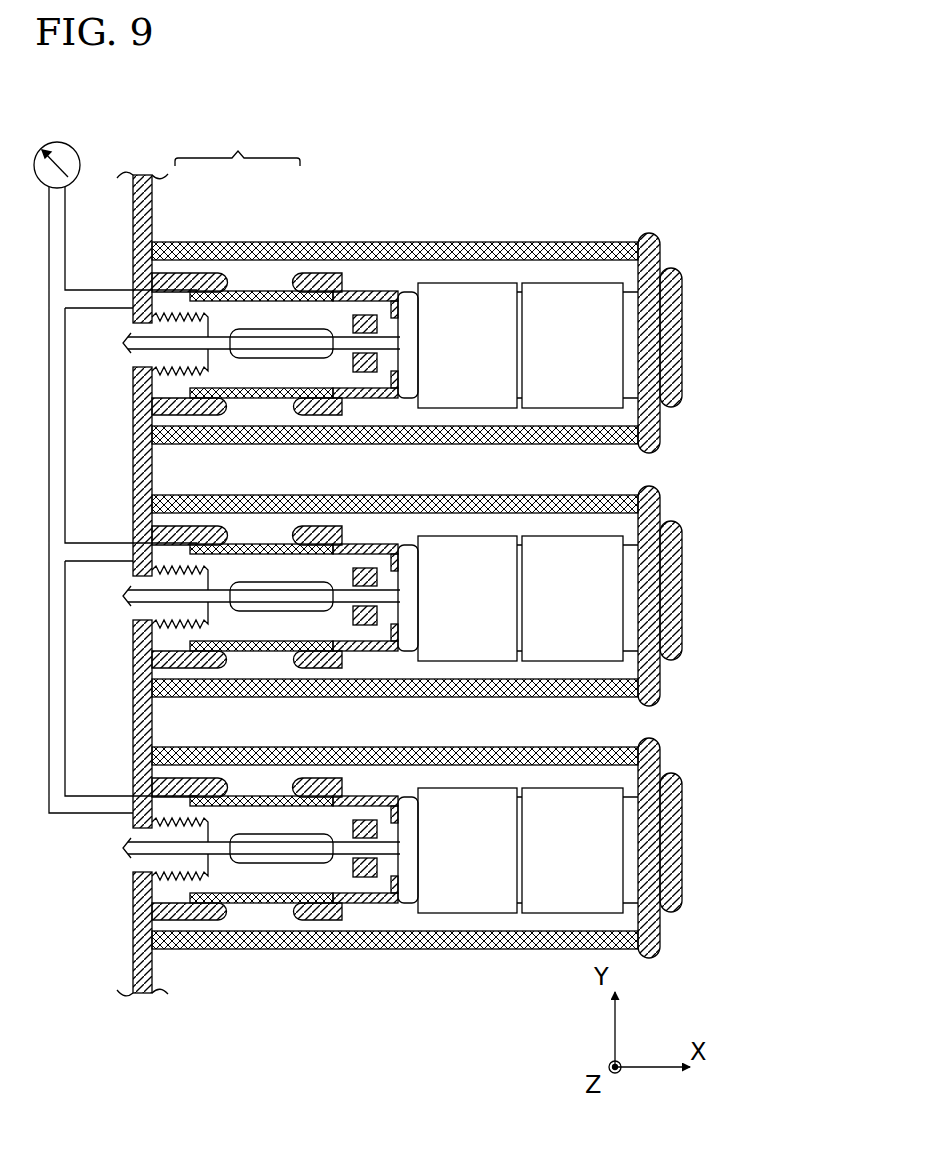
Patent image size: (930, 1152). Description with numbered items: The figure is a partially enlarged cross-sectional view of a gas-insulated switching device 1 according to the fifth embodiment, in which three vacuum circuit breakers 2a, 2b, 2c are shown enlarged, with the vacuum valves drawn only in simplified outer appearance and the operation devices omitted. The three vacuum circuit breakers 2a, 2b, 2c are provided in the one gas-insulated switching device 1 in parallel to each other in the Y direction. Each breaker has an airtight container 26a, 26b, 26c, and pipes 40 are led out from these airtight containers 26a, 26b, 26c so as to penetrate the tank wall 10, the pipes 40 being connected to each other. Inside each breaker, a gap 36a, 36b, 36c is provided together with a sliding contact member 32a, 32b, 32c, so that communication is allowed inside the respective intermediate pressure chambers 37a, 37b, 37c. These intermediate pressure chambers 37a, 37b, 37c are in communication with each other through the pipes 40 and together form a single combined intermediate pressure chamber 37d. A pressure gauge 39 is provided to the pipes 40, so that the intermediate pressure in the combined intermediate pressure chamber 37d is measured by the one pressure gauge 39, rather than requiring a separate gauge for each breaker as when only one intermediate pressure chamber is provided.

The gas-insulated switching device 1 is at (646, 166).
The vacuum circuit breaker 2a is at (480, 229).
The vacuum circuit breaker 2b is at (412, 566).
The vacuum circuit breaker 2c is at (417, 820).
The tank wall 10 is at (133, 960).
The airtight container 26a is at (361, 276).
The airtight container 26b is at (303, 559).
The airtight container 26c is at (313, 814).
The sliding contact member 32a is at (363, 381).
The sliding contact member 32b is at (386, 657).
The sliding contact member 32c is at (345, 911).
The gap 36a is at (368, 306).
The gap 36b is at (503, 598).
The gap 36c is at (503, 850).
The intermediate pressure chamber 37a is at (229, 328).
The intermediate pressure chamber 37b is at (282, 322).
The intermediate pressure chamber 37c is at (340, 323).
The intermediate pressure chamber 37d is at (237, 143).
The pressure gauge 39 is at (74, 146).
The pipes 40 is at (70, 292).